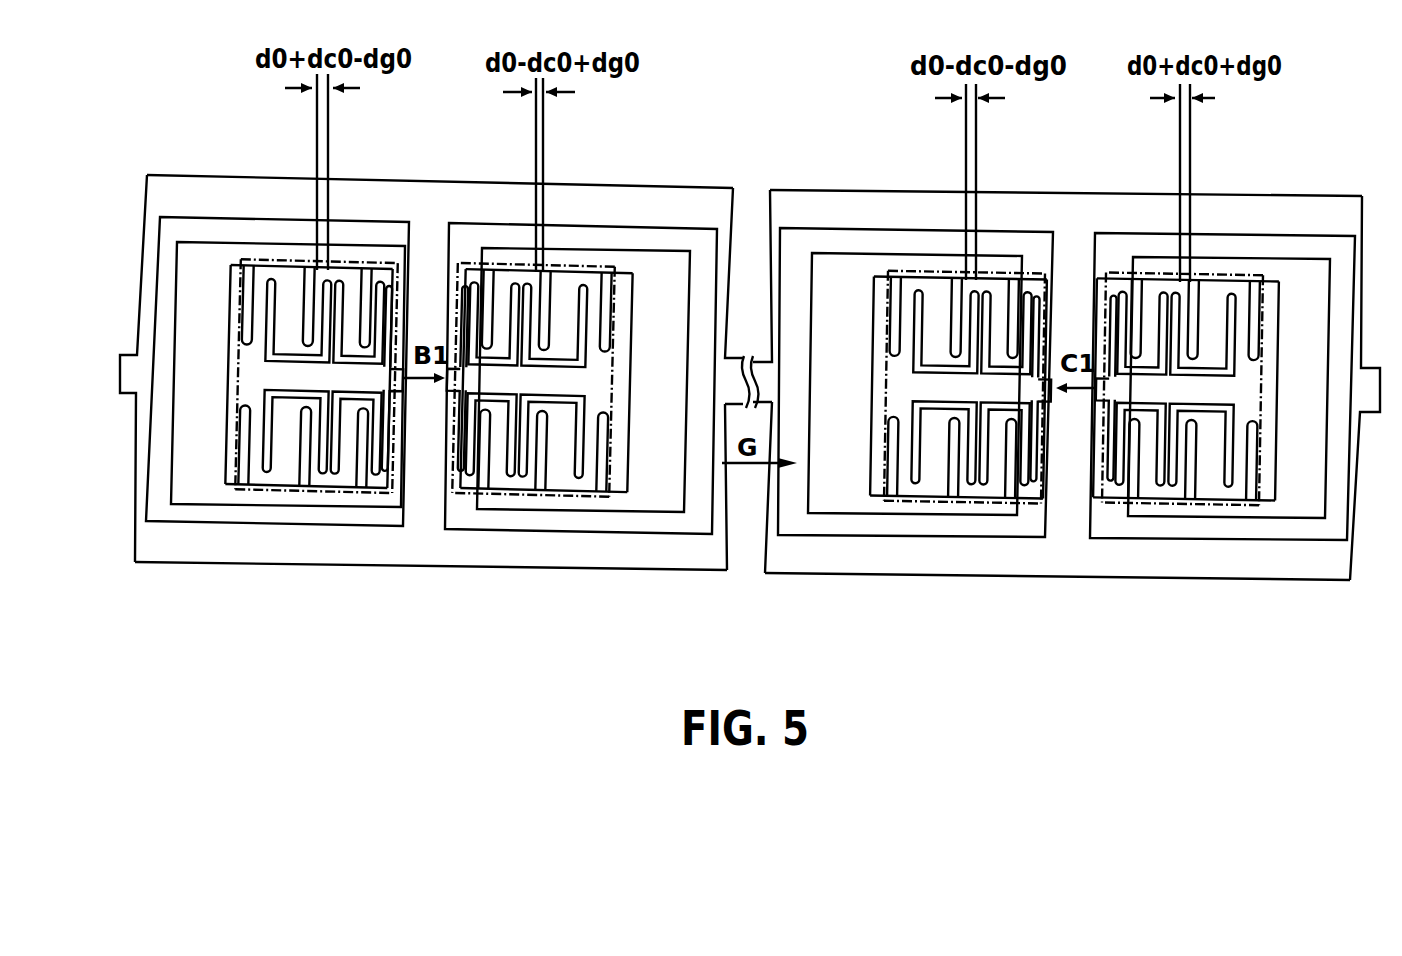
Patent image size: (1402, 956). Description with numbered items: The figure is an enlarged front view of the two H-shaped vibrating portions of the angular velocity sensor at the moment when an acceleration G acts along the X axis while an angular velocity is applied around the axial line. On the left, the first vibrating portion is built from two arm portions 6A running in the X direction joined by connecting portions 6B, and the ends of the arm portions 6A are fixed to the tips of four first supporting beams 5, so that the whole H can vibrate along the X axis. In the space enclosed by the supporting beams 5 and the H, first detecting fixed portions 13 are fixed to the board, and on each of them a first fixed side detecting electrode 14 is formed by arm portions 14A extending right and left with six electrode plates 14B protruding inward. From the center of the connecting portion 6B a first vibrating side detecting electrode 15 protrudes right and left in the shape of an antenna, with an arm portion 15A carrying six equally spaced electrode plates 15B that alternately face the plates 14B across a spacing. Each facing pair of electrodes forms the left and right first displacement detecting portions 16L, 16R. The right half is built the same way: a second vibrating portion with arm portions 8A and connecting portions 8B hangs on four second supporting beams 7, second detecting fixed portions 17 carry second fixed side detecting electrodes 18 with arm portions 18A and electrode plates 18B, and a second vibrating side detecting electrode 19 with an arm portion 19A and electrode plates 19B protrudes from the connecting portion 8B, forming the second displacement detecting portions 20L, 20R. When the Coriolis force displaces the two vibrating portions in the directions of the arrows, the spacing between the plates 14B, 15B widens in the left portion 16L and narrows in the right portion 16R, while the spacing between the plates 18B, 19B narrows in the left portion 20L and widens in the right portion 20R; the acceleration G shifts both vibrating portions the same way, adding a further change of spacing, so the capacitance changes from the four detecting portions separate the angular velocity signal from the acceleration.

The first supporting beam 5 is at (721, 482).
The arm portion 6A is at (178, 566).
The connecting portion 6B is at (422, 486).
The second supporting beam 7 is at (776, 466).
The arm portion 8A is at (1322, 568).
The connecting portion 8B is at (1057, 488).
The first detecting fixed portion 13 is at (653, 472).
The first fixed side detecting electrode 14 is at (536, 472).
The arm portion 14A is at (240, 492).
The electrode plate 14B is at (545, 325).
The first vibrating side detecting electrode 15 is at (466, 452).
The arm portion 15A is at (571, 466).
The electrode plate 15B is at (330, 490).
The first displacement detecting portion 16L is at (238, 333).
The first displacement detecting portion 16R is at (617, 353).
The second detecting fixed portion 17 is at (840, 487).
The second fixed side detecting electrode 18 is at (960, 472).
The arm portion 18A is at (1257, 492).
The electrode plate 18B is at (1200, 325).
The second vibrating side detecting electrode 19 is at (1032, 489).
The arm portion 19A is at (1216, 444).
The electrode plate 19B is at (1158, 490).
The second displacement detecting portion 20L is at (888, 343).
The second displacement detecting portion 20R is at (1268, 353).